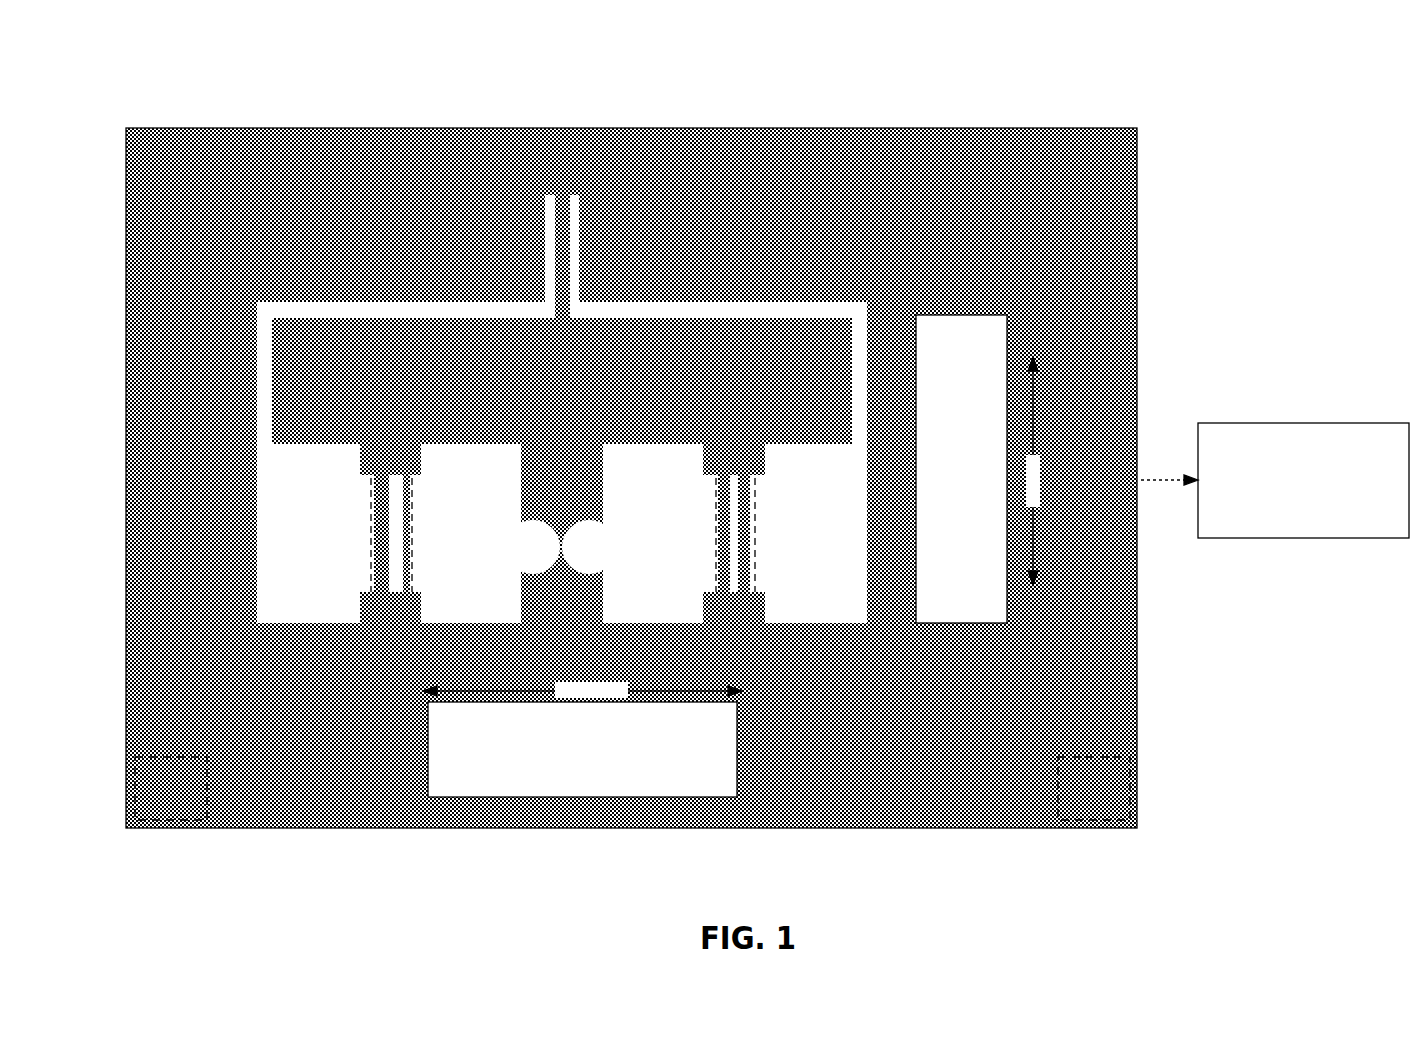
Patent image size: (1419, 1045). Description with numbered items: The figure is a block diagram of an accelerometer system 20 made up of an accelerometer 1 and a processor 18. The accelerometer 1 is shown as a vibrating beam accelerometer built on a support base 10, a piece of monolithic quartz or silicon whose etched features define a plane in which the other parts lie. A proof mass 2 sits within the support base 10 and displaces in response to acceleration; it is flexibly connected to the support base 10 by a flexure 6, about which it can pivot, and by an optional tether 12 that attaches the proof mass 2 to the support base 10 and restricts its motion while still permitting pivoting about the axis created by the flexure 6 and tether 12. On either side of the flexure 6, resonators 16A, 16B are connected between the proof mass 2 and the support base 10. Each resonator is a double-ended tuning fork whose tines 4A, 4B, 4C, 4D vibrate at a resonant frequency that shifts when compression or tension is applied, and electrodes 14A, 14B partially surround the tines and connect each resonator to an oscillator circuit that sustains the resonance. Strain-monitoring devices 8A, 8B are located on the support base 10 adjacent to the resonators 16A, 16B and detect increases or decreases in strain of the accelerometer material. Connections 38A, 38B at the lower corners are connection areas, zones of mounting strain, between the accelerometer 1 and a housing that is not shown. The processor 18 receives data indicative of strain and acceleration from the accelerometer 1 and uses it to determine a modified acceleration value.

The accelerometer system 20 is at (203, 72).
The accelerometer 1 is at (294, 128).
The support base 10 is at (241, 256).
The tether 12 is at (561, 242).
The proof mass 2 is at (545, 393).
The tine 4A is at (384, 513).
The tine 4B is at (392, 513).
The tine 4C is at (727, 511).
The tine 4D is at (742, 512).
The flexure 6 is at (558, 547).
The electrode 14A is at (410, 556).
The electrode 14B is at (769, 535).
The resonator 16A is at (380, 563).
The resonator 16B is at (747, 563).
The strain-monitoring device 8A is at (566, 789).
The strain-monitoring device 8B is at (981, 469).
The processor 18 is at (1288, 504).
The connection 38A is at (207, 781).
The connection 38B is at (1058, 781).